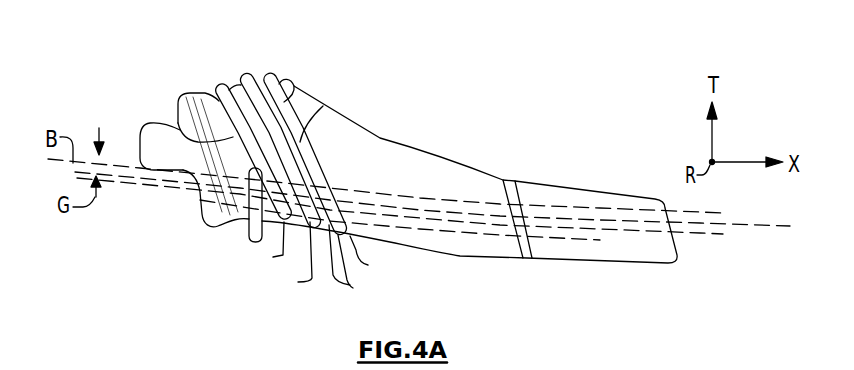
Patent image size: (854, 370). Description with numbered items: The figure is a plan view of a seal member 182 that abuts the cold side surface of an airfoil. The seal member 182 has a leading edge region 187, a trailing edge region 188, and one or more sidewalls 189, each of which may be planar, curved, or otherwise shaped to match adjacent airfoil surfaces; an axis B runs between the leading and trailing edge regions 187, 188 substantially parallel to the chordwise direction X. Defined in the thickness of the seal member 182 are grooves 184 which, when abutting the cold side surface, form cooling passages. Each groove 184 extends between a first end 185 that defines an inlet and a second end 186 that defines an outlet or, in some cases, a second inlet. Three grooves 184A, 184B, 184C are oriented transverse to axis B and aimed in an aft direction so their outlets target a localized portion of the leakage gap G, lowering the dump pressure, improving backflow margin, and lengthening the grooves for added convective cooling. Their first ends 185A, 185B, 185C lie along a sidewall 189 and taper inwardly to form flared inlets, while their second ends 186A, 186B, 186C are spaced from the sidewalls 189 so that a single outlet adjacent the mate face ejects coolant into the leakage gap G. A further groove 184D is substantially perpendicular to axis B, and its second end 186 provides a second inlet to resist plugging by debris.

The seal member 182 is at (151, 75).
The grooves 184 is at (260, 230).
The groove 184A is at (178, 123).
The groove 184B is at (281, 90).
The groove 184C is at (323, 106).
The groove 184D is at (514, 187).
The first end 185 is at (247, 129).
The first end 185A is at (211, 84).
The first end 185B is at (236, 81).
The first end 185C is at (265, 76).
The second end 186 is at (361, 261).
The second end 186A is at (253, 247).
The second end 186B is at (282, 258).
The second end 186C is at (381, 256).
The leading edge region 187 is at (180, 117).
The trailing edge region 188 is at (673, 230).
The sidewalls 189 is at (417, 148).